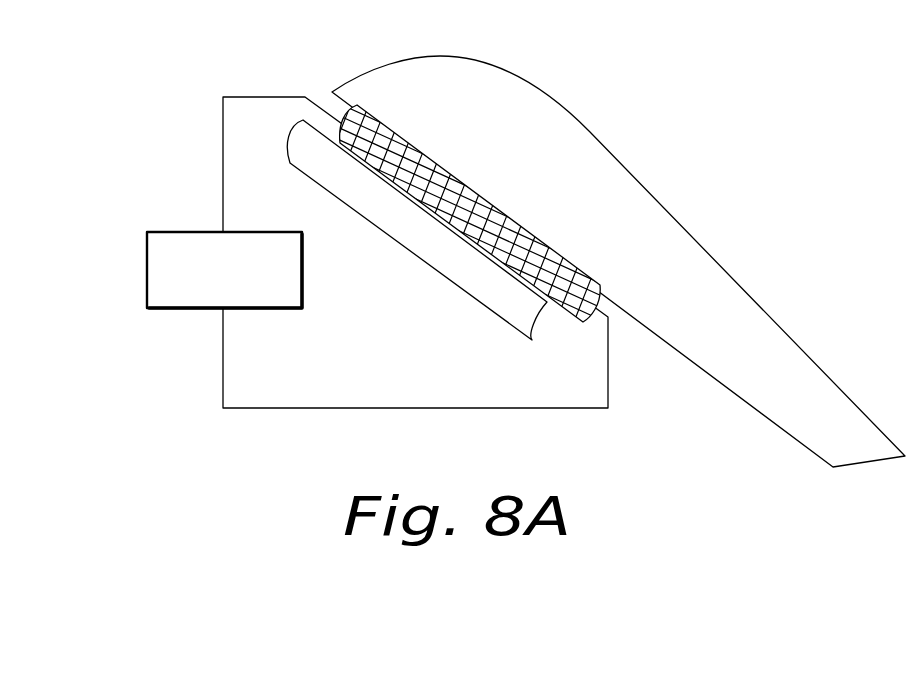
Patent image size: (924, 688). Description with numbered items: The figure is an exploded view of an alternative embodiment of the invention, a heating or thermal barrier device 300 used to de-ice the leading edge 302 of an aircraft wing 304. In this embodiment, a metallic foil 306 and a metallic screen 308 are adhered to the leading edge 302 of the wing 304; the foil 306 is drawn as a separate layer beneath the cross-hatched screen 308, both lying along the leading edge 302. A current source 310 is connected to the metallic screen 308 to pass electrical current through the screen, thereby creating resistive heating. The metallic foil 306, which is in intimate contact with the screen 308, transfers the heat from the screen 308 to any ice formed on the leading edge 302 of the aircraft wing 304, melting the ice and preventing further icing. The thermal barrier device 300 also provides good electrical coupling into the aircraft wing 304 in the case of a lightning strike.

The heating or thermal barrier device 300 is at (338, 82).
The leading edge 302 is at (338, 93).
The aircraft wing 304 is at (562, 187).
The metallic foil 306 is at (420, 235).
The screen 308 is at (533, 246).
The current source 310 is at (302, 288).